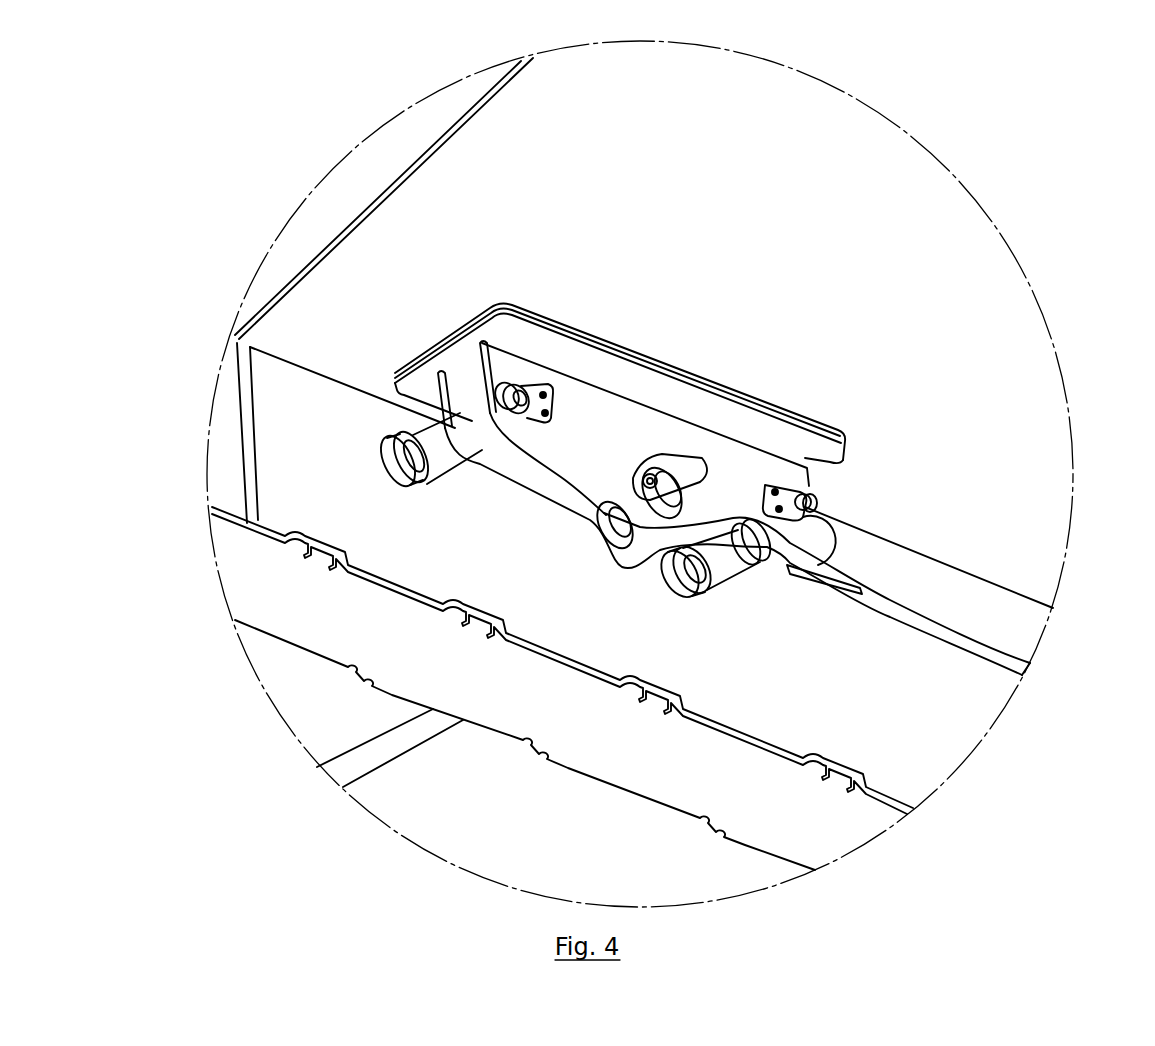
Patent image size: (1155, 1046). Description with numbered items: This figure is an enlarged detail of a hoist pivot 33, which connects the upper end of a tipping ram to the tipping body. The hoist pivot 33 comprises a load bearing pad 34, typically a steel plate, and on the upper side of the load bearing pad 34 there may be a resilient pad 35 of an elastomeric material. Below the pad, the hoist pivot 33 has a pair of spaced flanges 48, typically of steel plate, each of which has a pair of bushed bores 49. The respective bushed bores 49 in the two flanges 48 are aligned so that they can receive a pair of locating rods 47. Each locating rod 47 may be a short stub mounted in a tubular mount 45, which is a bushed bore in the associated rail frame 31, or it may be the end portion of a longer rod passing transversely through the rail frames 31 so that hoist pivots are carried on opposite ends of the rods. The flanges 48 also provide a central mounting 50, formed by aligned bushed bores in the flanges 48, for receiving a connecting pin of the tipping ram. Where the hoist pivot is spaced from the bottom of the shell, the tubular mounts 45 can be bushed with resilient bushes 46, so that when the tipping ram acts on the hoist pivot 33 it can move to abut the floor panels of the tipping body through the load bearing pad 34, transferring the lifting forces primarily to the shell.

The rail frame 31 is at (982, 718).
The hoist pivot 33 is at (590, 320).
The load bearing pad 34 is at (698, 422).
The resilient pad 35 is at (652, 356).
The tubular mount 45 is at (477, 556).
The resilient bush 46 is at (387, 453).
The locating rod 47 is at (447, 453).
The flange 48 is at (413, 378).
The bushed bore 49 is at (532, 375).
The central mounting 50 is at (822, 480).